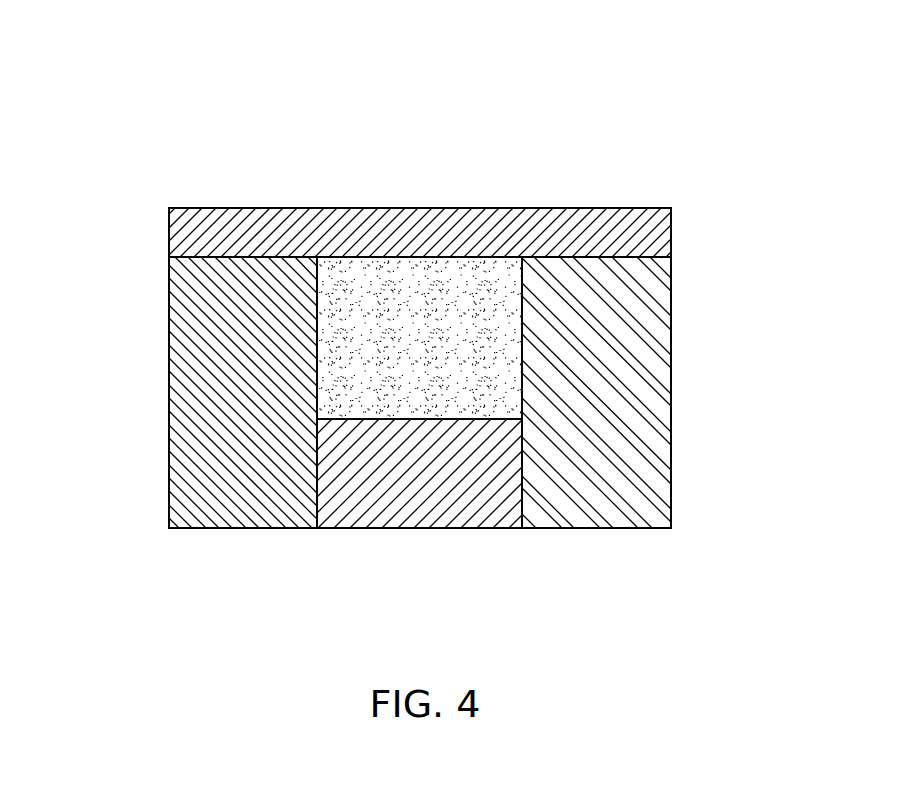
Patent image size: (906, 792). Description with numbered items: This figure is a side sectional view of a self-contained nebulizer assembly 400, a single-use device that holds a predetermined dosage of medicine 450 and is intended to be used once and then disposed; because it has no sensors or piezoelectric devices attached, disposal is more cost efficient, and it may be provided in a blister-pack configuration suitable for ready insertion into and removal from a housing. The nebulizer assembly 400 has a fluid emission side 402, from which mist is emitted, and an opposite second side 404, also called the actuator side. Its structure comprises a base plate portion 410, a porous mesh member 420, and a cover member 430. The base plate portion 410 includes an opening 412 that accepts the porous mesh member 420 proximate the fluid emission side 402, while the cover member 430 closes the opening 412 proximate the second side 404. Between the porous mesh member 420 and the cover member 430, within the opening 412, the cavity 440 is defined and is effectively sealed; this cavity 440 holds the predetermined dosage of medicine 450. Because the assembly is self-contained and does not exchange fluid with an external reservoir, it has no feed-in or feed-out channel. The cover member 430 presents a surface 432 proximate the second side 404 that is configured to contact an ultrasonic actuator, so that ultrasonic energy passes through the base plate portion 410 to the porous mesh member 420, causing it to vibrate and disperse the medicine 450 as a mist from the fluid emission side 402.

The nebulizer assembly 400 is at (687, 67).
The fluid emission side 402 is at (132, 513).
The second side 404 is at (132, 237).
The base plate portion 410 is at (671, 380).
The opening 412 is at (335, 545).
The porous mesh member 420 is at (445, 528).
The cover member 430 is at (671, 248).
The surface 432 is at (193, 205).
The cavity 440 is at (426, 282).
The predetermined dosage of medicine 450 is at (383, 305).